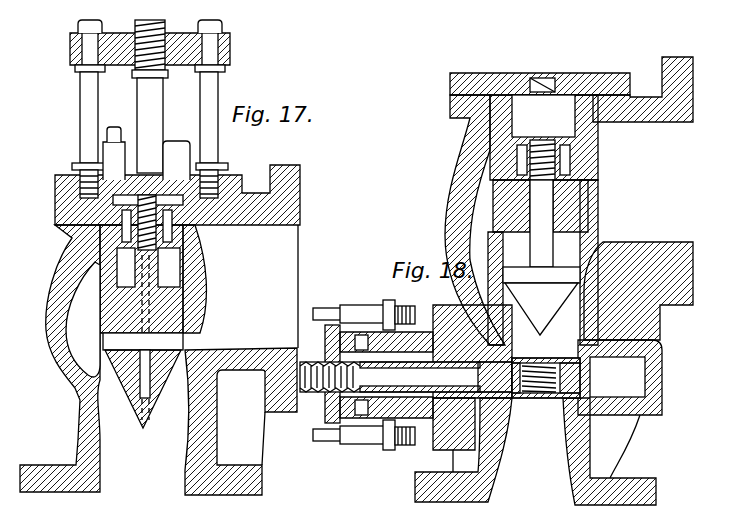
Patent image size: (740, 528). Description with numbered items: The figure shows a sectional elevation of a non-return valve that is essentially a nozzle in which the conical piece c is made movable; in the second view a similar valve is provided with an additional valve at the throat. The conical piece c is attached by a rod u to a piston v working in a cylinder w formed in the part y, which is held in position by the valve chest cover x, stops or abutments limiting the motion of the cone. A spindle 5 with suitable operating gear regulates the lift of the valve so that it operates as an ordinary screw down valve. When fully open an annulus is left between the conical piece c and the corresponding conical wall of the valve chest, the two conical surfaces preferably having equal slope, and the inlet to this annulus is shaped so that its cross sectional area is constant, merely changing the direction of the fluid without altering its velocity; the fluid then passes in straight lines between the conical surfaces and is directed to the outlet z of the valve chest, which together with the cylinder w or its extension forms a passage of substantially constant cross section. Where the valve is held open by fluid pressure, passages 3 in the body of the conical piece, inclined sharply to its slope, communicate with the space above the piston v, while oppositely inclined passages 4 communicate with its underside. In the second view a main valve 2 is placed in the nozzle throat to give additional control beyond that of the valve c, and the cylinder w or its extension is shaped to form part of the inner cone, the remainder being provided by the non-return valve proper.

In FIG. 18, the main valve 2 is at (541, 405).
In FIG. 17, the passages 3 is at (162, 425).
In FIG. 17, the passages 4 is at (131, 436).
In FIG. 17, the spindle 5 is at (156, 108).
In FIG. 17, the cylinder W is at (115, 200).
In FIG. 18, the cylinder W is at (538, 102).
In FIG. 17, the piston V is at (186, 244).
In FIG. 18, the piston V is at (580, 118).
In FIG. 17, the rod u is at (155, 306).
In FIG. 18, the rod u is at (540, 200).
In FIG. 17, the part y is at (185, 346).
In FIG. 18, the part y is at (585, 237).
In FIG. 17, the outlet Z is at (283, 293).
In FIG. 18, the outlet Z is at (699, 180).
In FIG. 17, the conical piece c is at (120, 352).
In FIG. 18, the conical piece c is at (565, 322).
In FIG. 17, the inlet passage a is at (145, 472).
In FIG. 18, the inlet passage a is at (536, 490).
In FIG. 17, the valve chest cover X is at (238, 162).
In FIG. 18, the valve chest cover X is at (628, 80).